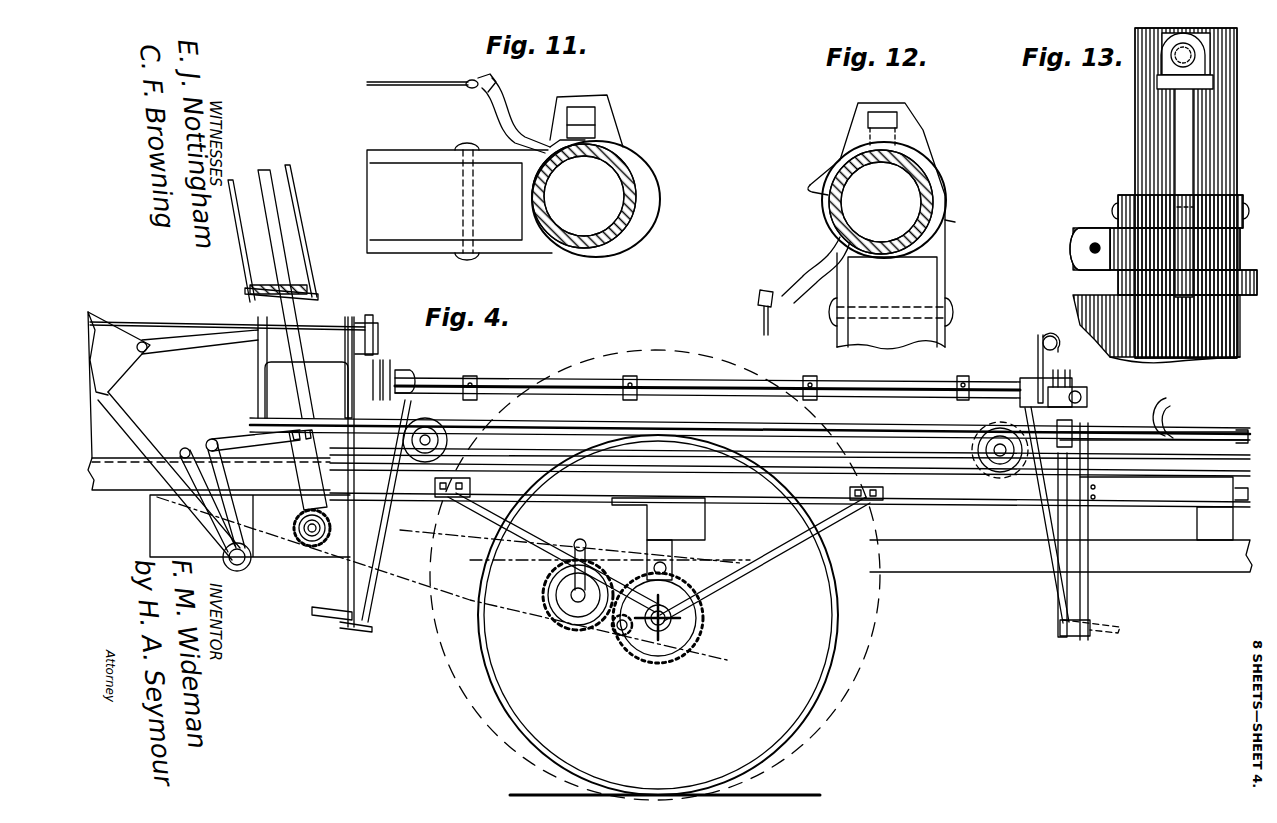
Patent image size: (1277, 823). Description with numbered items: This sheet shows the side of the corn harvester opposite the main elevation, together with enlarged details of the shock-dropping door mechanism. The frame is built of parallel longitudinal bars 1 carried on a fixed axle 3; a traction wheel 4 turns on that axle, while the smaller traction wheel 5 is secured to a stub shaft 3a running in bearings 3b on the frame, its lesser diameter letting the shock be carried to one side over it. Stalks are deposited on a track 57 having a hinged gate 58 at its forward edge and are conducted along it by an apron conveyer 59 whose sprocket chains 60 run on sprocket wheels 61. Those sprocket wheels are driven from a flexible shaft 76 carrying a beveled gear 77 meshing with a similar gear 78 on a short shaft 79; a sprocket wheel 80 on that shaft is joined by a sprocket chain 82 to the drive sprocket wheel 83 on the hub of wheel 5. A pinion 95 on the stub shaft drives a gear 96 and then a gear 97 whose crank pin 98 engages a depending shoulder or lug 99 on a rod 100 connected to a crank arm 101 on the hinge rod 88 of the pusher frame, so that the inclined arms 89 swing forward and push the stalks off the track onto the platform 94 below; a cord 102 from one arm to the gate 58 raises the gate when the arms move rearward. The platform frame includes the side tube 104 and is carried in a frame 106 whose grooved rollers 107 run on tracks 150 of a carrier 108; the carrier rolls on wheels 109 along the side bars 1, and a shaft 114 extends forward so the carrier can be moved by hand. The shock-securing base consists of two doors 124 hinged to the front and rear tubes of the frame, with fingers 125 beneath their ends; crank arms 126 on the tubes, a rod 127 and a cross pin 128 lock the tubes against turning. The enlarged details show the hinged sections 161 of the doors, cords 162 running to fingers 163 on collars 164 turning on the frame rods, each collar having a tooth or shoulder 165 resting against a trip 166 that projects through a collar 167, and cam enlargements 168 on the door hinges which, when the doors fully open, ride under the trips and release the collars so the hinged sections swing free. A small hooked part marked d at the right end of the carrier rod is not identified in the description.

In FIG. 4, the longitudinal bars 1 is at (670, 442).
In FIG. 4, the fixed axle 3 is at (672, 560).
In FIG. 4, the stub shaft 3a is at (657, 651).
In FIG. 4, the bearings 3b is at (661, 589).
In FIG. 4, the traction wheel 4 is at (880, 648).
In FIG. 4, the traction wheel 5 is at (830, 700).
In FIG. 4, the track 57 is at (345, 348).
In FIG. 4, the hinged gate 58 is at (374, 318).
In FIG. 4, the apron conveyer 59 is at (243, 258).
In FIG. 4, the sprocket chains 60 is at (312, 293).
In FIG. 4, the sprocket wheels 61 is at (265, 285).
In FIG. 4, the flexible shaft 76 is at (275, 229).
In FIG. 4, the beveled gear 77 is at (296, 510).
In FIG. 4, the beveled gear 78 is at (305, 545).
In FIG. 4, the short shaft 79 is at (318, 548).
In FIG. 4, the sprocket wheel 80 is at (296, 540).
In FIG. 4, the sprocket chain 82 is at (376, 585).
In FIG. 4, the drive sprocket wheel 83 is at (690, 631).
In FIG. 4, the pivot or hinge rod 88 is at (238, 572).
In FIG. 4, the inclined arms 89 is at (160, 418).
In FIG. 4, the platform 94 is at (692, 380).
In FIG. 4, the pinion 95 is at (672, 645).
In FIG. 4, the gear 96 is at (615, 635).
In FIG. 4, the gear 97 is at (545, 590).
In FIG. 4, the crank pin 98 is at (585, 540).
In FIG. 4, the depending shoulder or lug 99 is at (605, 545).
In FIG. 4, the rod 100 is at (575, 540).
In FIG. 4, the crank arm 101 is at (215, 440).
In FIG. 4, the cord 102 is at (326, 327).
In FIG. 4, the bar 104 is at (755, 420).
In FIG. 4, the frame 106 is at (1025, 380).
In FIG. 4, the grooved rollers 107 is at (392, 366).
In FIG. 4, the carrier 108 is at (790, 454).
In FIG. 4, the wheels 109 is at (497, 407).
In FIG. 4, the shaft 114 is at (905, 428).
In FIG. 11, the doors 124 is at (459, 201).
In FIG. 12, the doors 124 is at (891, 303).
In FIG. 4, the doors 124 is at (428, 534).
In FIG. 4, the fingers 125 is at (636, 368).
In FIG. 4, the crank arms 126 is at (1038, 370).
In FIG. 4, the rod 127 is at (1050, 336).
In FIG. 4, the cross pin 128 is at (1060, 345).
In FIG. 4, the tracks 150 is at (415, 410).
In FIG. 4, the hinged sections 161 is at (326, 618).
In FIG. 11, the cords 162 is at (431, 89).
In FIG. 12, the cords 162 is at (749, 312).
In FIG. 4, the cords 162 is at (418, 510).
In FIG. 11, the fingers 163 is at (513, 97).
In FIG. 12, the fingers 163 is at (815, 270).
In FIG. 13, the fingers 163 is at (1075, 257).
In FIG. 13, the collars 164 is at (1235, 264).
In FIG. 11, the tooth or shoulder 165 is at (603, 138).
In FIG. 12, the tooth or shoulder 165 is at (812, 186).
In FIG. 13, the tooth or shoulder 165 is at (1207, 247).
In FIG. 11, the trip 166 is at (596, 118).
In FIG. 12, the trip 166 is at (881, 112).
In FIG. 13, the trip 166 is at (1175, 170).
In FIG. 11, the collar 167 is at (600, 97).
In FIG. 12, the collar 167 is at (906, 106).
In FIG. 13, the collar 167 is at (1240, 197).
In FIG. 11, the cam enlargements 168 is at (612, 198).
In FIG. 12, the cam enlargements 168 is at (904, 137).
In FIG. 13, the cam enlargements 168 is at (1217, 283).
In FIG. 4, the hook d is at (1167, 413).